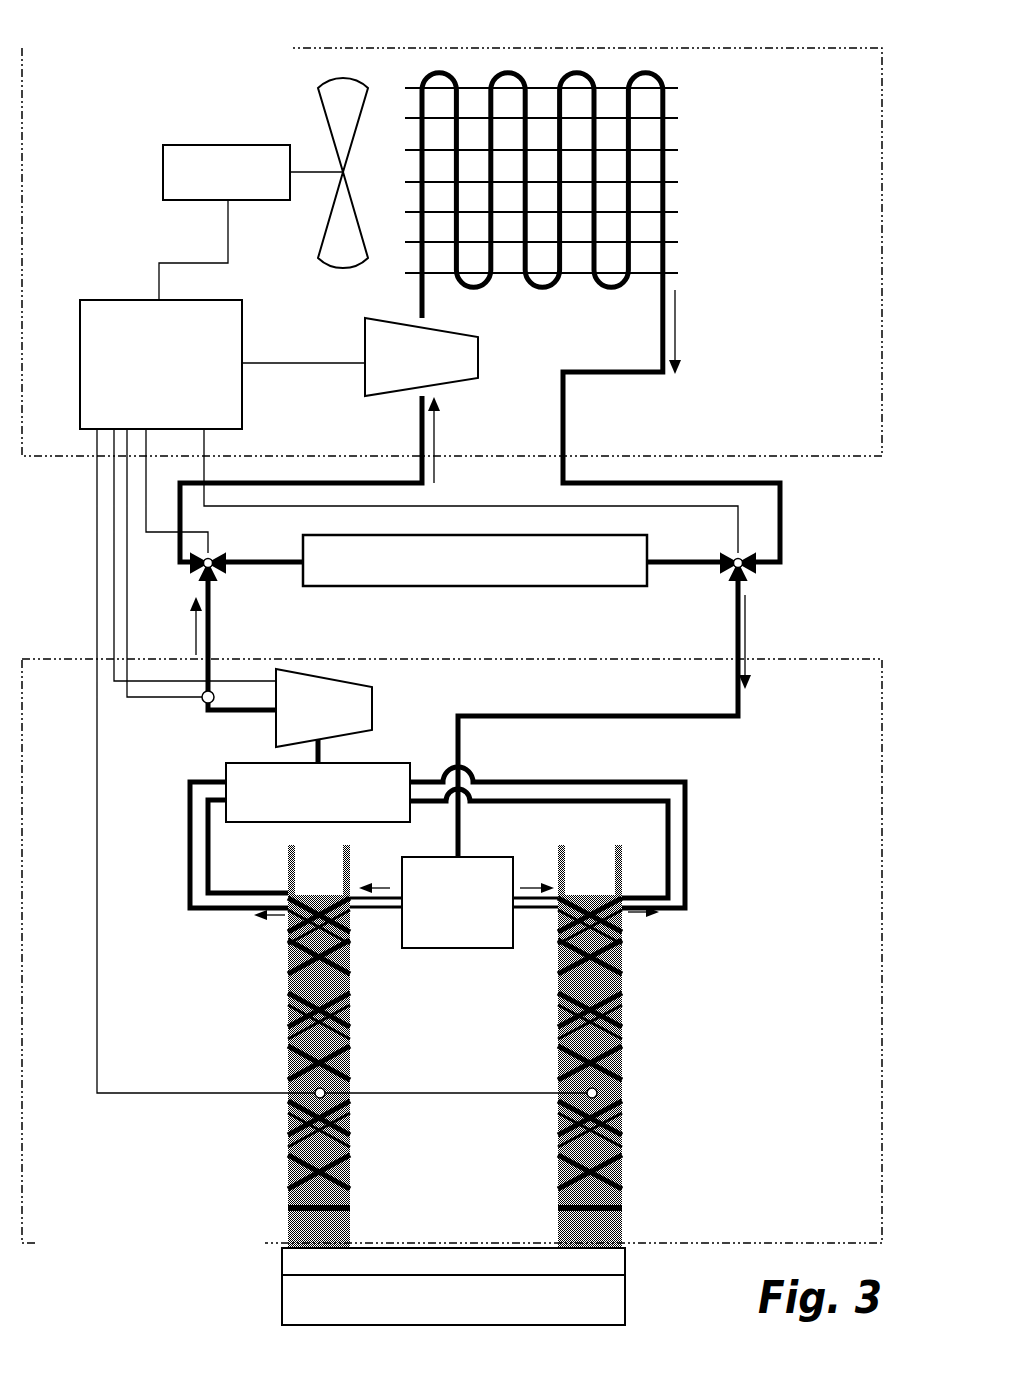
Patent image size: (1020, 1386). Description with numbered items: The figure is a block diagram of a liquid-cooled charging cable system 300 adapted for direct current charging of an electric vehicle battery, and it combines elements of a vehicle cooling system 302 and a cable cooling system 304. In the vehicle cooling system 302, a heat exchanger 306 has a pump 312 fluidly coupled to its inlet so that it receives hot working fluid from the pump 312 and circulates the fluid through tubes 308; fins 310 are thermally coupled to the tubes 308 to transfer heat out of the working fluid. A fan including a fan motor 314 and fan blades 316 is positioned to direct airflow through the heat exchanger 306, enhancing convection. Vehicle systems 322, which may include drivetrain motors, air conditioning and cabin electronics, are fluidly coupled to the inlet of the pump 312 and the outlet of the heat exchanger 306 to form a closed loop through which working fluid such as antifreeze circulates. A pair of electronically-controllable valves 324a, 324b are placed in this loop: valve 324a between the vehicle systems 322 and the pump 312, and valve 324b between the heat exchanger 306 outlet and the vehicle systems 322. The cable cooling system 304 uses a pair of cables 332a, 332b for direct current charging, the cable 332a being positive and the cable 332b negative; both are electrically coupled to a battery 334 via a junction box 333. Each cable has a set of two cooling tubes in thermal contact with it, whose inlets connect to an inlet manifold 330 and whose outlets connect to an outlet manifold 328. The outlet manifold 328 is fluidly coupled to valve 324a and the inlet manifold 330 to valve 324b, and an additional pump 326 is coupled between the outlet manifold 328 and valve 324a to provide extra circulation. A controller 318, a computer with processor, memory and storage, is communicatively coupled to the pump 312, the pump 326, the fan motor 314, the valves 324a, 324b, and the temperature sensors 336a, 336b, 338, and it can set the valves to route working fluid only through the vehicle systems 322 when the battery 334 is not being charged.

The liquid-cooled charging cable system 300 is at (838, 29).
The vehicle cooling system 302 is at (452, 240).
The cable cooling system 304 is at (452, 962).
The heat exchanger 306 is at (592, 285).
The tubes 308 is at (662, 197).
The fins 310 is at (665, 108).
The pump 312 is at (329, 440).
The fan motor 314 is at (251, 222).
The fan blades 316 is at (345, 106).
The controller 318 is at (409, 696).
The vehicle systems 322 is at (474, 560).
The electronically-controllable valve 324a is at (222, 579).
The electronically-controllable valve 324b is at (752, 579).
The additional pump 326 is at (290, 671).
The outlet manifold 328 is at (437, 835).
The inlet manifold 330 is at (544, 764).
The cable 332a is at (319, 1046).
The cable 332b is at (590, 1046).
The junction box 333 is at (453, 1261).
The battery 334 is at (453, 1300).
The temperature sensor 336a is at (325, 1094).
The temperature sensor 336b is at (597, 1094).
The temperature sensor 338 is at (205, 703).